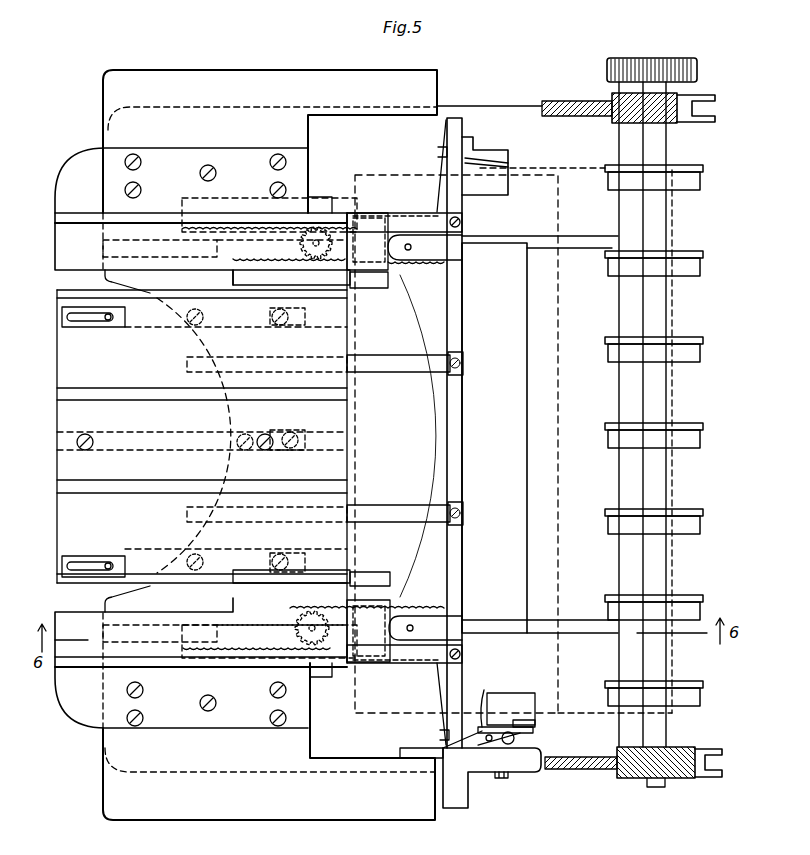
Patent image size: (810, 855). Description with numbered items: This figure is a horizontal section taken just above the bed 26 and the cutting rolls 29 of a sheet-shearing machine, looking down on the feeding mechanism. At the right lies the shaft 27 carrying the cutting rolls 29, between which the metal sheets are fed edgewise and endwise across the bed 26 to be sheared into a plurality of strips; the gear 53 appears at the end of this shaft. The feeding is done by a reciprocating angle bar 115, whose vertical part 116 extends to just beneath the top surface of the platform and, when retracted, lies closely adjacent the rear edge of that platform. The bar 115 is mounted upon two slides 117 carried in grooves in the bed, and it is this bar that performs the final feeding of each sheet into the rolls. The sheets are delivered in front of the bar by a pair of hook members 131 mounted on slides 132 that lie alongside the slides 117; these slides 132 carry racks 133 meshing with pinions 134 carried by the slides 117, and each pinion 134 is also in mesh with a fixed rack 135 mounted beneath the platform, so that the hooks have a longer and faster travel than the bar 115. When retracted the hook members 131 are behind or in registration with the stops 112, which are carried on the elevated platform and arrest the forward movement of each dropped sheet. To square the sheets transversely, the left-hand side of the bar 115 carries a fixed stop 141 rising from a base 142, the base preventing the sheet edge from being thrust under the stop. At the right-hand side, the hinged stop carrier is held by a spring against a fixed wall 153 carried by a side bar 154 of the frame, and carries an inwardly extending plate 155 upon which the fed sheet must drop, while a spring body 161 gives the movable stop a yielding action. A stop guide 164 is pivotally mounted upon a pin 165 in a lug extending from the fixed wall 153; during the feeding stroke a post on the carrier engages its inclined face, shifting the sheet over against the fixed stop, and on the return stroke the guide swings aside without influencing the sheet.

The gear 53 is at (700, 72).
The stop 141 is at (493, 157).
The base 142 is at (494, 184).
The shaft 27 is at (655, 209).
The cutting rolls 29 is at (688, 347).
The table or bed 26 is at (592, 384).
The vertical part 116 is at (450, 290).
The angle bar 115 is at (466, 310).
The spring body 161 is at (503, 321).
The stops 112 is at (127, 323).
The fixed rack 135 is at (322, 200).
The pinions 134 is at (340, 227).
The racks 133 is at (427, 265).
The hook members 131 is at (377, 306).
The slides 132 is at (435, 597).
The slides 117 is at (580, 627).
The stop guide 164 is at (482, 726).
The plate 155 is at (508, 703).
The fixed wall 153 is at (430, 751).
The pin 165 is at (523, 738).
The side bar 154 is at (458, 782).